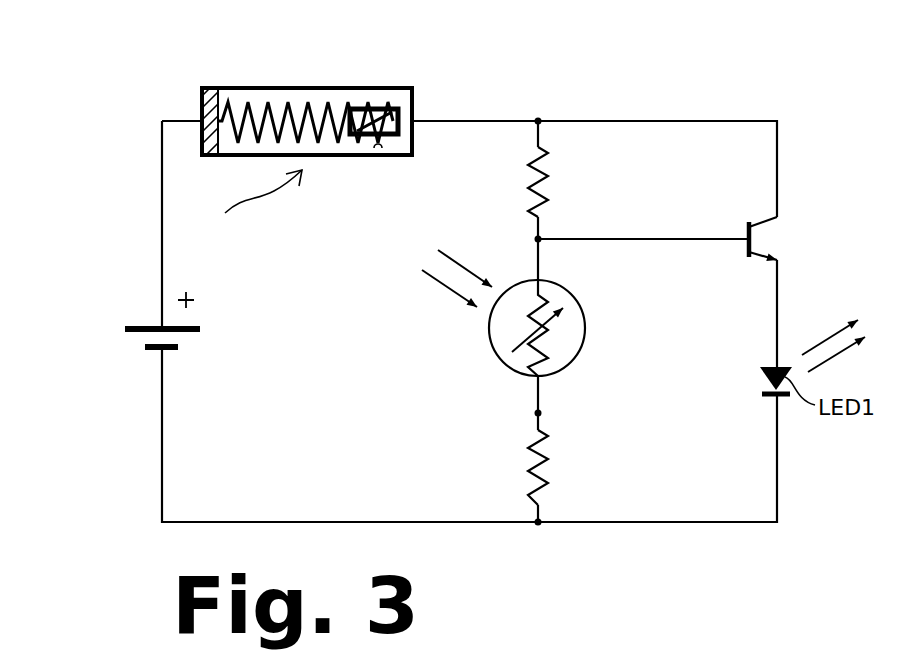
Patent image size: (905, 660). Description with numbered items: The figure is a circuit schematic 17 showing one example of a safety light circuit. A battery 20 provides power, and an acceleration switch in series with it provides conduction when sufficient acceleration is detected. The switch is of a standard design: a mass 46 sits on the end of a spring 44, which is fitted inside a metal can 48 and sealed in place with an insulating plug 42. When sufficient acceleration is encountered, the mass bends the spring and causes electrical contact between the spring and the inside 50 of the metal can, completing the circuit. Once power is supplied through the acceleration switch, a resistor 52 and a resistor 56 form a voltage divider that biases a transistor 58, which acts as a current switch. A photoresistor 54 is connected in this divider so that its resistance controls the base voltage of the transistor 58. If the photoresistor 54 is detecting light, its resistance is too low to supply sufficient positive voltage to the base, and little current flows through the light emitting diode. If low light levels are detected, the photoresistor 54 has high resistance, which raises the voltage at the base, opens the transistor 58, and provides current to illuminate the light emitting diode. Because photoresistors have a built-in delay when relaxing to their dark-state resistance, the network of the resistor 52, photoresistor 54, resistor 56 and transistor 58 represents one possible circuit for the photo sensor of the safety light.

The circuit schematic 17 is at (722, 92).
The battery 20 is at (138, 327).
The insulating plug 42 is at (202, 118).
The spring 44 is at (303, 110).
The mass 46 is at (395, 113).
The metal can 48 is at (413, 132).
The inside of the metal can 50 is at (378, 150).
The resistor 52 is at (547, 175).
The photoresistor 54 is at (587, 327).
The resistor 56 is at (540, 480).
The transistor 58 is at (748, 227).